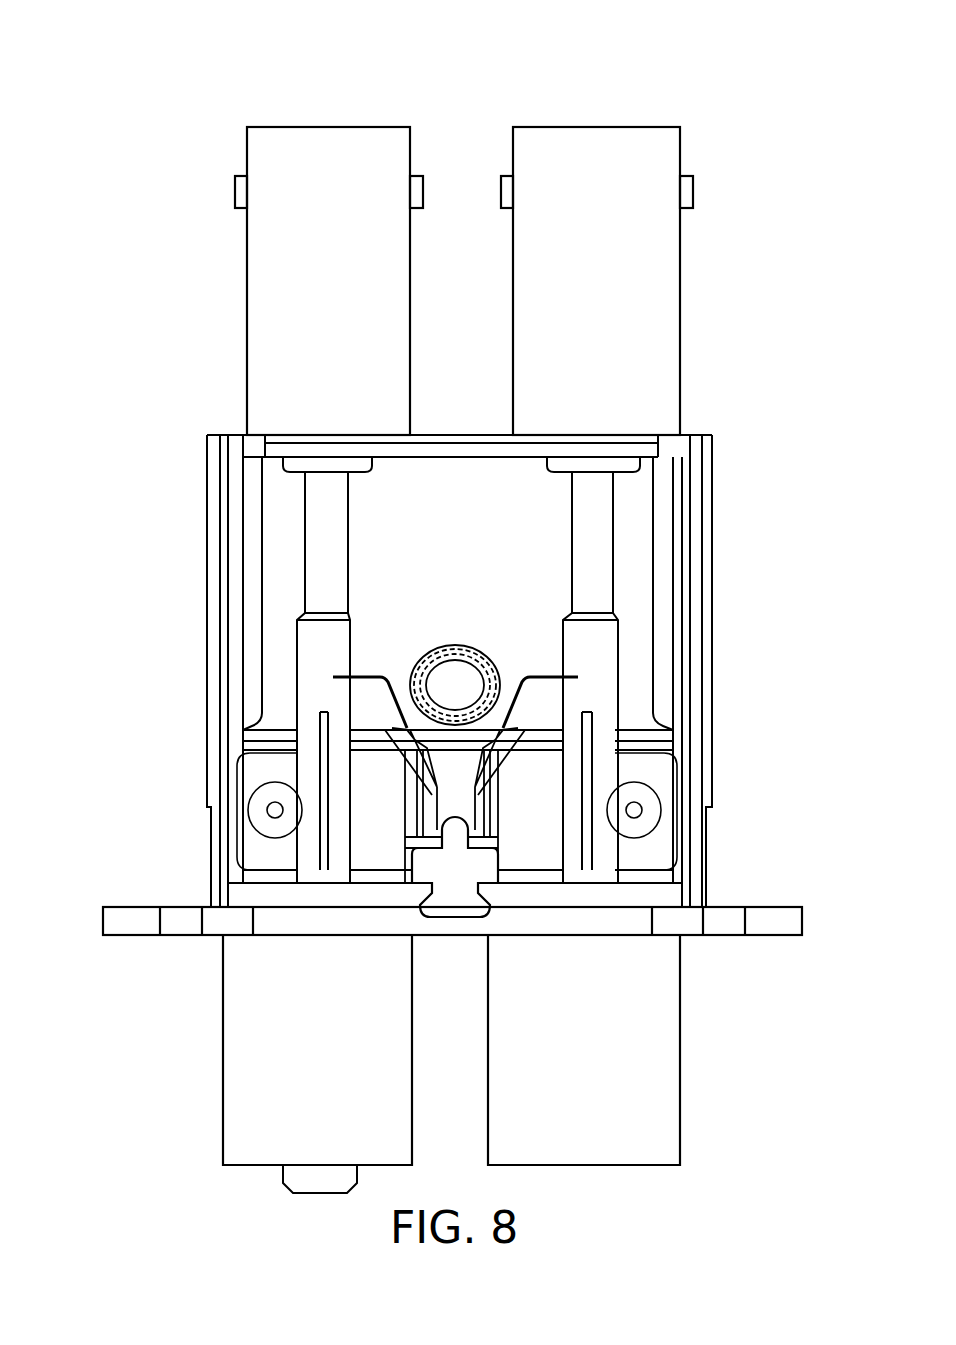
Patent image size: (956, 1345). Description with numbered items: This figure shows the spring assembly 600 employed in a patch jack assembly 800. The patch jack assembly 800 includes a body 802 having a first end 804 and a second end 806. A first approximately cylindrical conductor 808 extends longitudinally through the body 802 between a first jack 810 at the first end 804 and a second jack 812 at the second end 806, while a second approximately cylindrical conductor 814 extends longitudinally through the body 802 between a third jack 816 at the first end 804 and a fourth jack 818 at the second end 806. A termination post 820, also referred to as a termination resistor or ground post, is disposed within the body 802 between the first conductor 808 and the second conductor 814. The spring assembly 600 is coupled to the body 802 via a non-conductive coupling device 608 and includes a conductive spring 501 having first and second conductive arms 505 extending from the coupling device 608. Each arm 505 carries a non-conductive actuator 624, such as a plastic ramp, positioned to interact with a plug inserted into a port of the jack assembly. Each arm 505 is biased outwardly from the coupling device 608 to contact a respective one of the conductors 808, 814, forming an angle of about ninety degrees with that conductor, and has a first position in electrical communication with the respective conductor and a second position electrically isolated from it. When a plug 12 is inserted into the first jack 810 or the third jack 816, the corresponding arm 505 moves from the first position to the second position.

The patch jack assembly 800 is at (125, 102).
The body 802 is at (713, 607).
The first end 804 is at (633, 1188).
The second end 806 is at (529, 78).
The first approximately cylindrical conductor 808 is at (303, 557).
The first jack 810 is at (240, 1085).
The second jack 812 is at (267, 302).
The second approximately cylindrical conductor 814 is at (613, 485).
The third jack 816 is at (662, 1037).
The fourth jack 818 is at (665, 302).
The termination post 820 is at (457, 642).
The spring assembly 600 is at (397, 825).
The conductive spring 501 is at (497, 837).
The arm 505 is at (358, 675).
The non-conductive actuator 624 is at (407, 750).
The non-conductive coupling device 608 is at (482, 863).
The plug 12 is at (313, 1187).